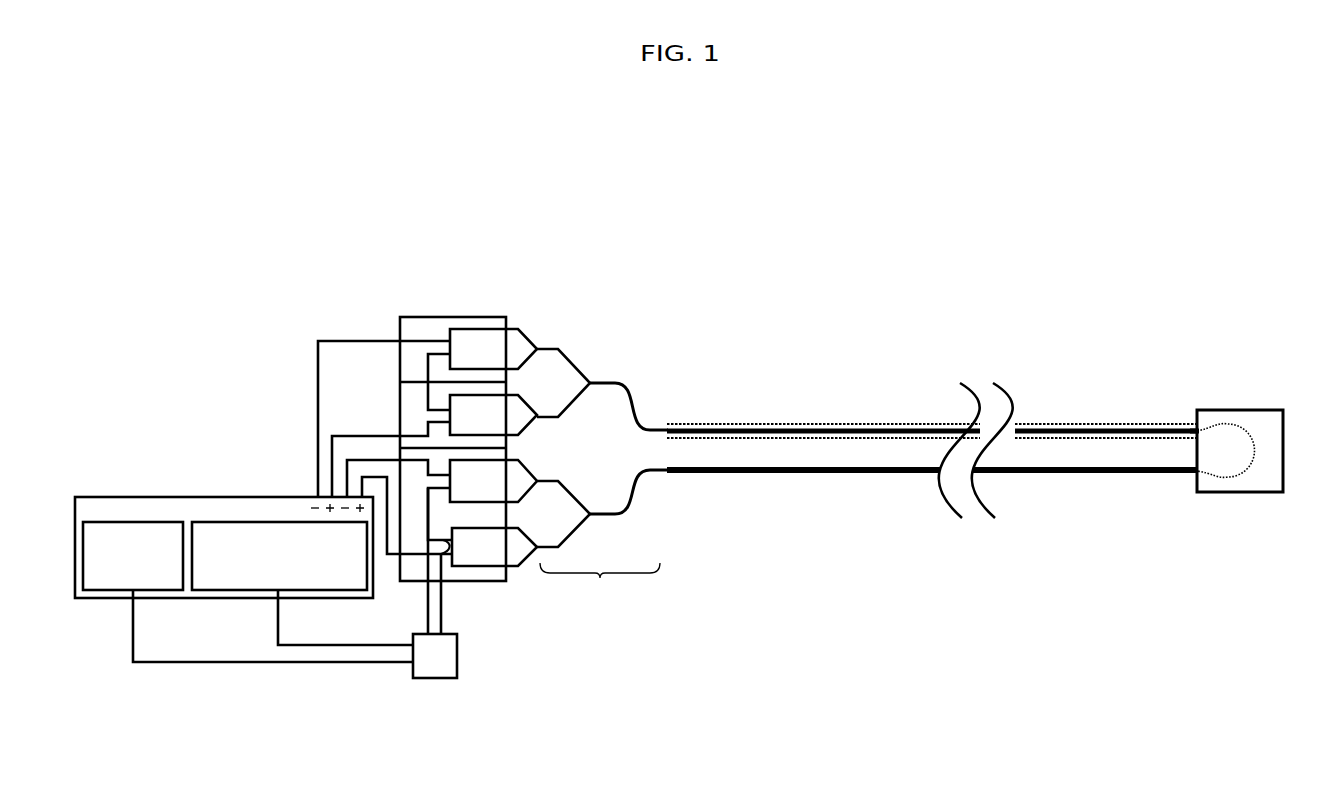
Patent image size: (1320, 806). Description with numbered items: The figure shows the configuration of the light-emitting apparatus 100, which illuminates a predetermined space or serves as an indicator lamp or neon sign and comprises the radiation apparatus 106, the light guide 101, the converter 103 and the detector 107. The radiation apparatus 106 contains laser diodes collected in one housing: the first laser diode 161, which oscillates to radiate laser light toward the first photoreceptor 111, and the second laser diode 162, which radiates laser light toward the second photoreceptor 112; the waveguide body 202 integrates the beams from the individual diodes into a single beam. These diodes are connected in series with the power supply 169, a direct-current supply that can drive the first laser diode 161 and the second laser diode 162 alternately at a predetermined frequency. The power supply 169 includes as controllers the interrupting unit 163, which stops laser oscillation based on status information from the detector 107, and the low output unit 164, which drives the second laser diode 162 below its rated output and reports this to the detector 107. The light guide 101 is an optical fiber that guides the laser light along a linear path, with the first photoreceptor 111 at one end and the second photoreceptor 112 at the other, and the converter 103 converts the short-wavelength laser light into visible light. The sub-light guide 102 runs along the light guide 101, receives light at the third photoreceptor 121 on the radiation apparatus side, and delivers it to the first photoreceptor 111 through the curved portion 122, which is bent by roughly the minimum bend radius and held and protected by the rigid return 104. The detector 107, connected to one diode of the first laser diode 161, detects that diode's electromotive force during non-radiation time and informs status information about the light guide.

The light-emitting apparatus 100 is at (970, 239).
The light guide 101 is at (862, 425).
The sub-light guide 102 is at (893, 476).
The converter 103 is at (1034, 424).
The return 104 is at (1235, 493).
The radiation apparatus 106 is at (493, 317).
The detector 107 is at (440, 678).
The first photoreceptor 111 is at (1199, 430).
The second photoreceptor 112 is at (662, 427).
The third photoreceptor 121 is at (665, 471).
The curved portion 122 is at (1247, 430).
The first laser diode 161 is at (513, 482).
The second laser diode 162 is at (533, 412).
The interrupting unit 163 is at (302, 590).
The low output unit 164 is at (152, 590).
The power supply 169 is at (224, 536).
The waveguide body 202 is at (600, 589).